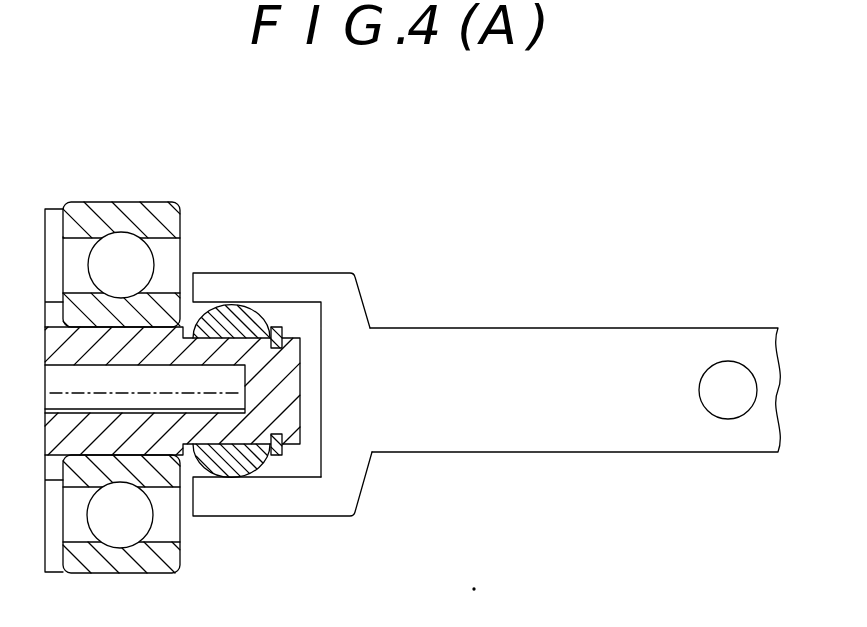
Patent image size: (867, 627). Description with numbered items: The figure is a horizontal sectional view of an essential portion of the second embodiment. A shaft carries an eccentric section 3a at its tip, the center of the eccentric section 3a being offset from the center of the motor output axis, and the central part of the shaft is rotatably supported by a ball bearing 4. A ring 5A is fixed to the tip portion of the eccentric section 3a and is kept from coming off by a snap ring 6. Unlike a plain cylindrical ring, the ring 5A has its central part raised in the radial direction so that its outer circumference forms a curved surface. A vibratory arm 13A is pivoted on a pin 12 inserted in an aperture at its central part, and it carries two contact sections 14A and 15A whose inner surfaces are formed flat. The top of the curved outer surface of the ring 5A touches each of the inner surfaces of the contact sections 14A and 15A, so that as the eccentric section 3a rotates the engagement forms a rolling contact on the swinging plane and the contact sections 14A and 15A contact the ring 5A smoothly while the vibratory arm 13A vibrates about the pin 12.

The eccentric section 3a is at (300, 388).
The ball bearing 4 is at (145, 212).
The ring 5A is at (229, 313).
The snap ring 6 is at (283, 327).
The pin 12 is at (728, 383).
The vibratory arm 13A is at (562, 358).
The contact section 14A is at (291, 288).
The contact section 15A is at (316, 496).